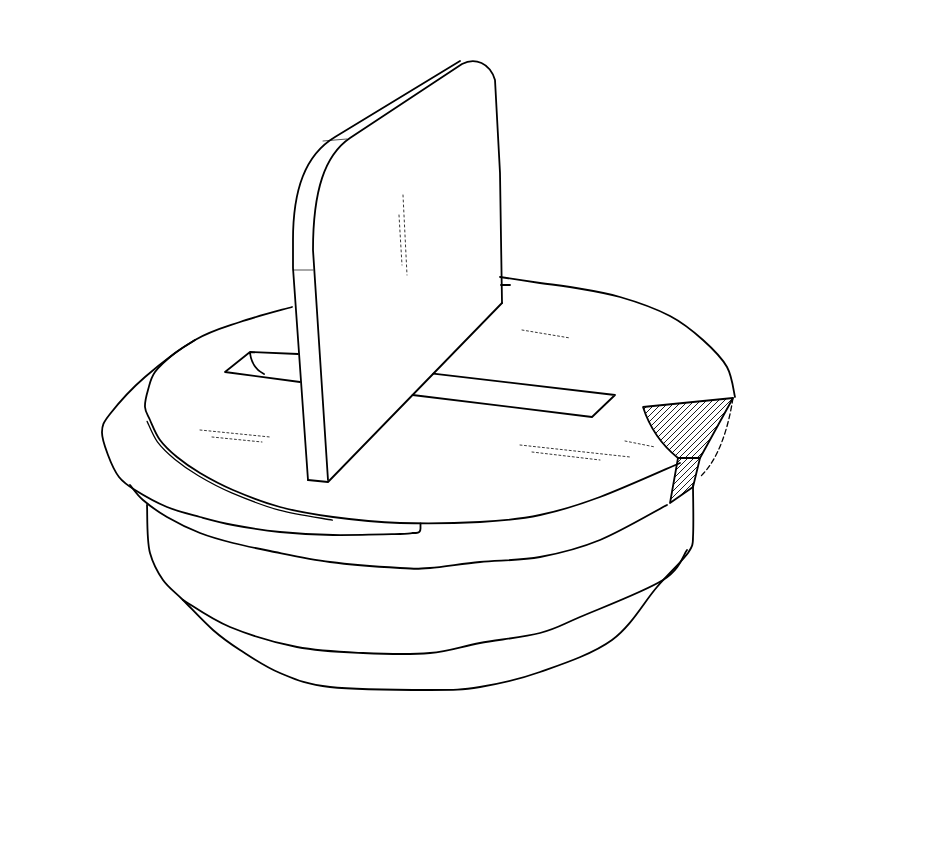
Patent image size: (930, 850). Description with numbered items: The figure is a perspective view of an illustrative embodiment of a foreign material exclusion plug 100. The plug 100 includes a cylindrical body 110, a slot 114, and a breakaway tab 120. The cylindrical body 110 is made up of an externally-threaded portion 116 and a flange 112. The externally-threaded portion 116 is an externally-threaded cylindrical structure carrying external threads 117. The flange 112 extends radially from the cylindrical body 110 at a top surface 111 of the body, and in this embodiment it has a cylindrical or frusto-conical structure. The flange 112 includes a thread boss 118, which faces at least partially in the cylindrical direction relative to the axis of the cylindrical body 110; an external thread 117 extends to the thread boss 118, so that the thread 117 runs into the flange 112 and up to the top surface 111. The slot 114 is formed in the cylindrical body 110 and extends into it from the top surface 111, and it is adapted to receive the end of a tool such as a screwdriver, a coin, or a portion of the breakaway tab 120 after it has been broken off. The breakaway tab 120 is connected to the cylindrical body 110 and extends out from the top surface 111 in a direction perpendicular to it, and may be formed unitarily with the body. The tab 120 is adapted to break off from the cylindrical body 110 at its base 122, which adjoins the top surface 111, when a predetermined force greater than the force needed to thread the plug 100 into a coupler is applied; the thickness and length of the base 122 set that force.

The foreign material exclusion plug 100 is at (602, 97).
The cylindrical body 110 is at (628, 287).
The top surface 111 is at (200, 393).
The flange 112 is at (627, 503).
The slot 114 is at (563, 398).
The externally-threaded portion 116 is at (145, 558).
The external threads 117 is at (130, 433).
The thread boss 118 is at (400, 530).
The breakaway tab 120 is at (362, 178).
The base 122 is at (500, 278).